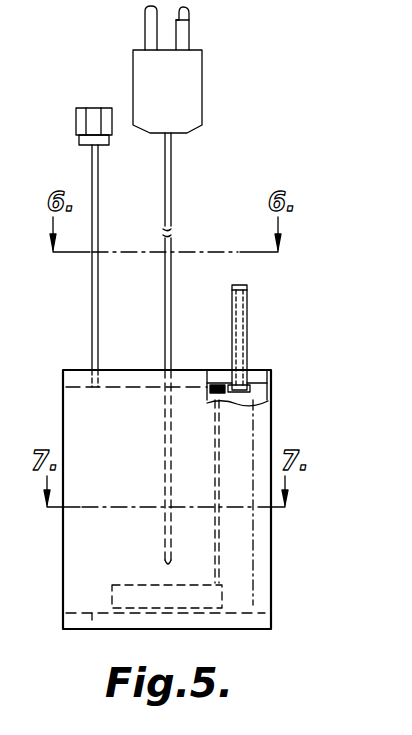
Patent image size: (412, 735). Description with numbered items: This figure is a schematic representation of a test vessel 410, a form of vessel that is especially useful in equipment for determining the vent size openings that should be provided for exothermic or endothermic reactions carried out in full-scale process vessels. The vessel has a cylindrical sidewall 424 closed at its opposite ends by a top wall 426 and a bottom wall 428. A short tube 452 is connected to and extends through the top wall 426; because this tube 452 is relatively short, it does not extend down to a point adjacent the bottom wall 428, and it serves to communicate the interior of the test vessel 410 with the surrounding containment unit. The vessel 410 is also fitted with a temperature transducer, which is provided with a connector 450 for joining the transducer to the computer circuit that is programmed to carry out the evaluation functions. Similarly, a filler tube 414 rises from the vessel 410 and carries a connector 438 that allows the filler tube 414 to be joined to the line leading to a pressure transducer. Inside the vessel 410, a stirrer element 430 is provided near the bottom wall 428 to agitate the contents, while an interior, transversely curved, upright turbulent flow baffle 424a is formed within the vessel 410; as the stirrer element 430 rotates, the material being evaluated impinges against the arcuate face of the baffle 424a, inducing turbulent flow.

The test vessel 410 is at (267, 370).
The filler tube 414 is at (91, 282).
The sidewall 424 is at (73, 528).
The turbulent flow baffle 424a is at (213, 399).
The top wall 426 is at (122, 388).
The bottom wall 428 is at (92, 628).
The stirrer element 430 is at (132, 583).
The connector 438 is at (76, 118).
The connector 450 is at (197, 64).
The short tube 452 is at (247, 305).